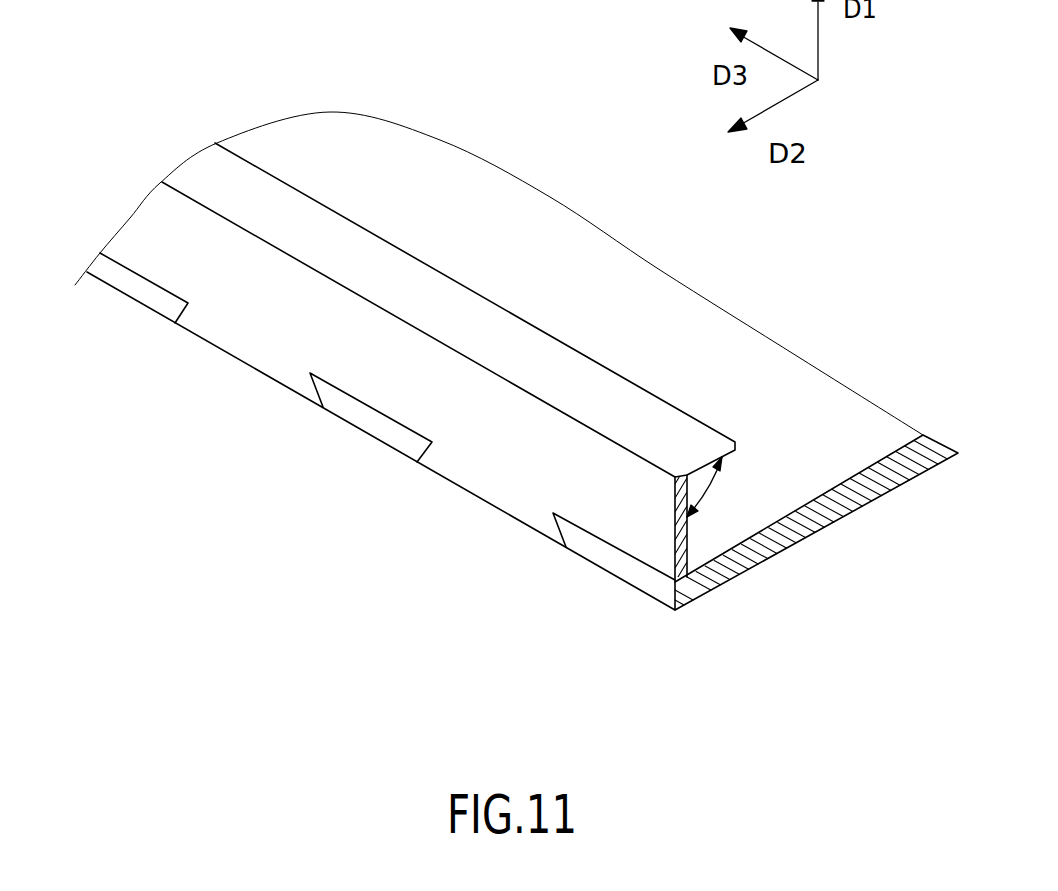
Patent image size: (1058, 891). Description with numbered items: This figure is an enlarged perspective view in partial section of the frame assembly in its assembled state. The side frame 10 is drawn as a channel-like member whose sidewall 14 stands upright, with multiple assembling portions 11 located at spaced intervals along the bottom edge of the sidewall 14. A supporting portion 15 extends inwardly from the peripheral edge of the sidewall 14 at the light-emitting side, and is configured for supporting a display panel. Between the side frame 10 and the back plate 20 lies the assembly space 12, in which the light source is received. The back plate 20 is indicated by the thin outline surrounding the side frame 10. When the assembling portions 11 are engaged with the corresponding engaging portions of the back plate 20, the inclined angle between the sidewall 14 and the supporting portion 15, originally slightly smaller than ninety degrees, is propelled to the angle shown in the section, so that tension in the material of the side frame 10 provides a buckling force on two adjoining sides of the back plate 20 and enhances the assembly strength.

The side frame 10 is at (500, 325).
The assembling portions 11 is at (253, 355).
The assembly space 12 is at (544, 260).
The sidewall 14 is at (182, 233).
The supporting portion 15 is at (227, 177).
The back plate 20 is at (820, 360).